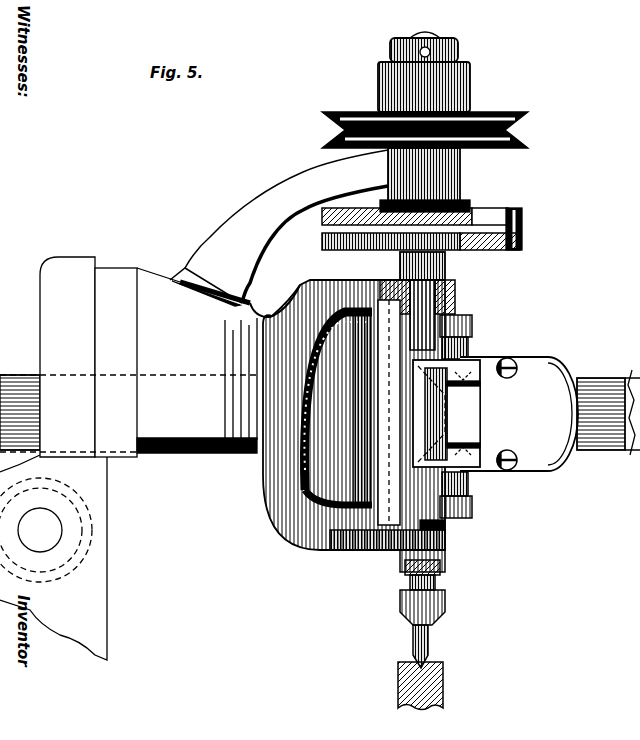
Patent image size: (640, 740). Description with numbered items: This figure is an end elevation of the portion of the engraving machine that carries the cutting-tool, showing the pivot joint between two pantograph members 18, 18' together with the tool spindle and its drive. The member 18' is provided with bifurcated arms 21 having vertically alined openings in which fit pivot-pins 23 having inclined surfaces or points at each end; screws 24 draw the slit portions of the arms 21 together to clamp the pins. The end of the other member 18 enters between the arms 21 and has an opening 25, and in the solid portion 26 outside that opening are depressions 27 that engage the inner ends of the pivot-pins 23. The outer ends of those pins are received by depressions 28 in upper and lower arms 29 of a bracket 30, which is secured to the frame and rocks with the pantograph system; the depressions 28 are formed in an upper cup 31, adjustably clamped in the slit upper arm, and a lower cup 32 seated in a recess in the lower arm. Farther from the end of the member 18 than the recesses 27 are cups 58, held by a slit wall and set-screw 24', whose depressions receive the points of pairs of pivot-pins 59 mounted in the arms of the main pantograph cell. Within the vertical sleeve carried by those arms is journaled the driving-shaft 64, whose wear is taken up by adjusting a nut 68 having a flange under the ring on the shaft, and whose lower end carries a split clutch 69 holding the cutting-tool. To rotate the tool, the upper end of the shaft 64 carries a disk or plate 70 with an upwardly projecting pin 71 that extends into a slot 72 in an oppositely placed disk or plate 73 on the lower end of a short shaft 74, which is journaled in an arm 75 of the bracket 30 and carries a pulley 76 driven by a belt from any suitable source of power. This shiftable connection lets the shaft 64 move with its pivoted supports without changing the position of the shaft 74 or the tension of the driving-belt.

The member 18 is at (130, 458).
The member 18' is at (608, 402).
The bifurcated arms 21 is at (390, 380).
The pivot-pins 23 is at (474, 323).
The screws 24 is at (350, 409).
The set-screw 24' is at (519, 414).
The opening 25 is at (461, 413).
The solid portion 26 is at (450, 408).
The depressions 27 is at (452, 436).
The depressions 28 is at (455, 310).
The arms 29 is at (454, 296).
The bracket 30 is at (268, 470).
The upper cup 31 is at (402, 282).
The lower cup 32 is at (447, 556).
The cups 58 is at (480, 386).
The pivot-pins 59 is at (470, 341).
The driving-shaft 64 is at (438, 580).
The nut 68 is at (405, 566).
The split clutch 69 is at (438, 604).
The disk or plate 70 is at (522, 246).
The pin 71 is at (522, 226).
The slot 72 is at (526, 217).
The disk or plate 73 is at (460, 210).
The short shaft 74 is at (428, 37).
The arm 75 is at (300, 181).
The pulley 76 is at (500, 122).